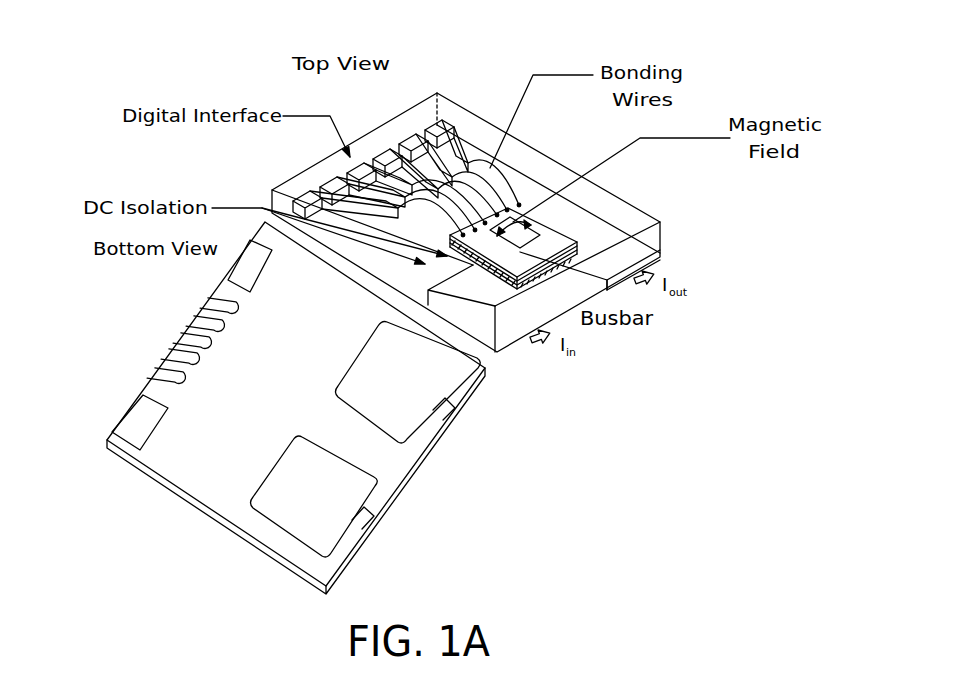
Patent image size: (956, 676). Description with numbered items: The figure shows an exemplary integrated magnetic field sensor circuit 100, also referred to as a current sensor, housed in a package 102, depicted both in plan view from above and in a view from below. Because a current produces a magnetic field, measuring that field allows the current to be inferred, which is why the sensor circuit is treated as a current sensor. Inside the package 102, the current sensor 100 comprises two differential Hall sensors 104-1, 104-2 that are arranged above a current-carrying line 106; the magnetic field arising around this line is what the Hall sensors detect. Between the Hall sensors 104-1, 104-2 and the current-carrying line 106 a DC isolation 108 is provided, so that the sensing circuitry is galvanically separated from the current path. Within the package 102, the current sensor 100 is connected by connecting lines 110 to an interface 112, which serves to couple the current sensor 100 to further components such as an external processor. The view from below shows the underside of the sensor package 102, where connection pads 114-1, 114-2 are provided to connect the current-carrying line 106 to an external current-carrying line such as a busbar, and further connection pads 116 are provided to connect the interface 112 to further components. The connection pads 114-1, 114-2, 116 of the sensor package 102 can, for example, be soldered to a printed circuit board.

The integrated magnetic field sensor circuit 100 is at (510, 208).
The package 102 is at (457, 100).
The differential Hall sensor 104-1 is at (533, 225).
The differential Hall sensor 104-2 is at (552, 238).
The current-carrying line 106 is at (630, 253).
The DC isolation 108 is at (520, 280).
The connecting lines 110 is at (488, 182).
The interface 112 is at (358, 178).
The connection pad 114-1 is at (408, 400).
The connection pad 114-2 is at (332, 508).
The connection pads 116 is at (178, 333).